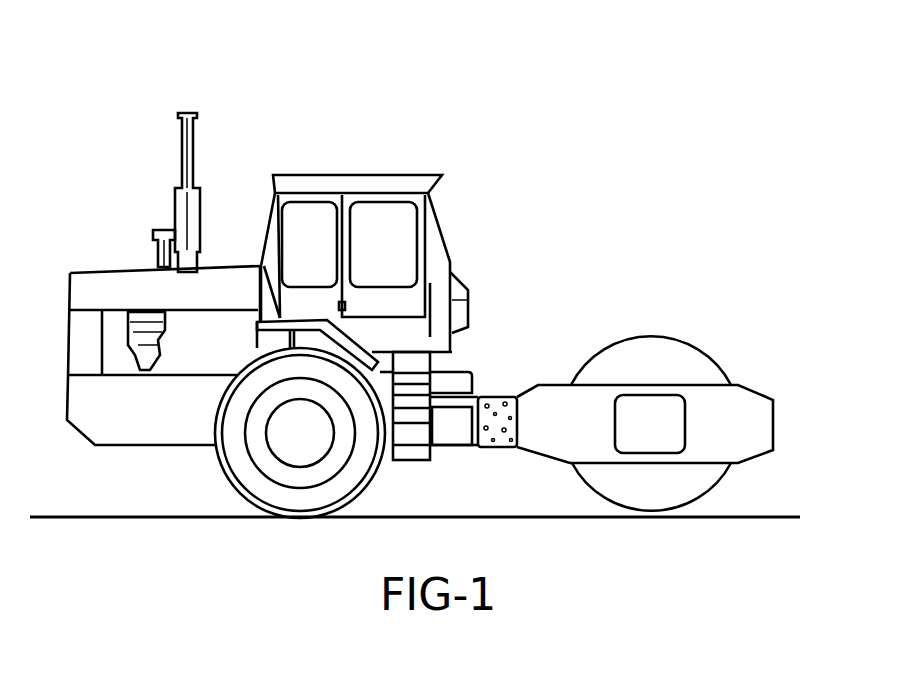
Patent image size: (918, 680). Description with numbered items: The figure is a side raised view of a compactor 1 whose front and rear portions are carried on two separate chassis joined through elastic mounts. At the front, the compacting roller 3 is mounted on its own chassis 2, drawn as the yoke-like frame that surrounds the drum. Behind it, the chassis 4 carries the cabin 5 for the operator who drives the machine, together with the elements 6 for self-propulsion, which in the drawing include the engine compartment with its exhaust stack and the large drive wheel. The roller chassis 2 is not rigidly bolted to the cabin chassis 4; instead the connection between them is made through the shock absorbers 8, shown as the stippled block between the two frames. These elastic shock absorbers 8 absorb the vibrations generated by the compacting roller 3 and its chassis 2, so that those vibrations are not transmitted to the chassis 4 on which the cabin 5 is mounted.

The compactor 1 is at (517, 277).
The chassis 2 is at (680, 385).
The compacting roller 3 is at (628, 350).
The chassis 4 is at (148, 423).
The cabin 5 is at (344, 232).
The elements for self-propulsion 6 is at (142, 323).
The shock absorbers 8 is at (490, 447).